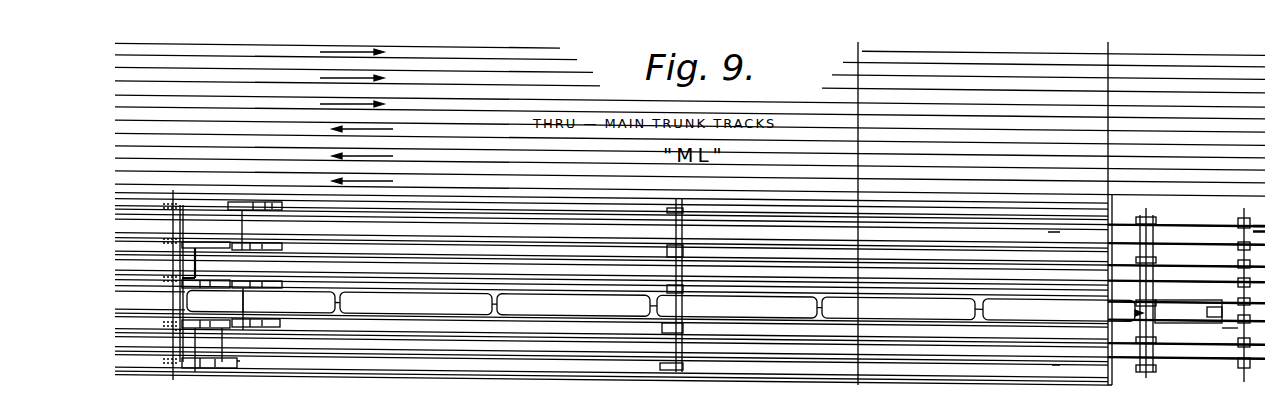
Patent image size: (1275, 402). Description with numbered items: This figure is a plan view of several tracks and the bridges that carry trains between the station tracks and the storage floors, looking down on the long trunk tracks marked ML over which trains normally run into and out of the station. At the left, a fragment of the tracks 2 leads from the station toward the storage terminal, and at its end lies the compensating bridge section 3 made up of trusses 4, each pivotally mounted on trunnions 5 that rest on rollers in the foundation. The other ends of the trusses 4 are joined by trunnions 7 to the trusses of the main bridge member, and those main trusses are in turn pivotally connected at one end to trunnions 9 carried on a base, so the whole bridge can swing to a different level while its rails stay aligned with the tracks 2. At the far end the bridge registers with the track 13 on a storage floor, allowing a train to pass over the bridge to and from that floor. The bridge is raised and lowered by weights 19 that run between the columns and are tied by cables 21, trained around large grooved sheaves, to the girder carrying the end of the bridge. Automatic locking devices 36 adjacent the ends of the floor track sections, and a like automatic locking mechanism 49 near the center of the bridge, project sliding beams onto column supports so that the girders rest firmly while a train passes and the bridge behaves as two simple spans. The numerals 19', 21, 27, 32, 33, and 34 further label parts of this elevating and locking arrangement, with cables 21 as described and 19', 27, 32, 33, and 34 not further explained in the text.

The tracks 2 is at (1258, 238).
The compensating bridge section 3 is at (1193, 368).
The trusses 4 is at (1210, 341).
The trunnions 5 is at (1241, 220).
The trunnions 7 is at (1054, 232).
The trunnions 9 is at (1148, 220).
The track 13 is at (151, 302).
The weights 19 is at (213, 305).
The switch machine 19' is at (265, 264).
The cables 21 is at (251, 378).
The relay 27 is at (220, 382).
The relay 32 is at (302, 322).
The relay 33 is at (283, 362).
The relay 34 is at (176, 387).
The automatic locking devices 36 is at (167, 331).
The automatic locking mechanism 49 is at (660, 291).